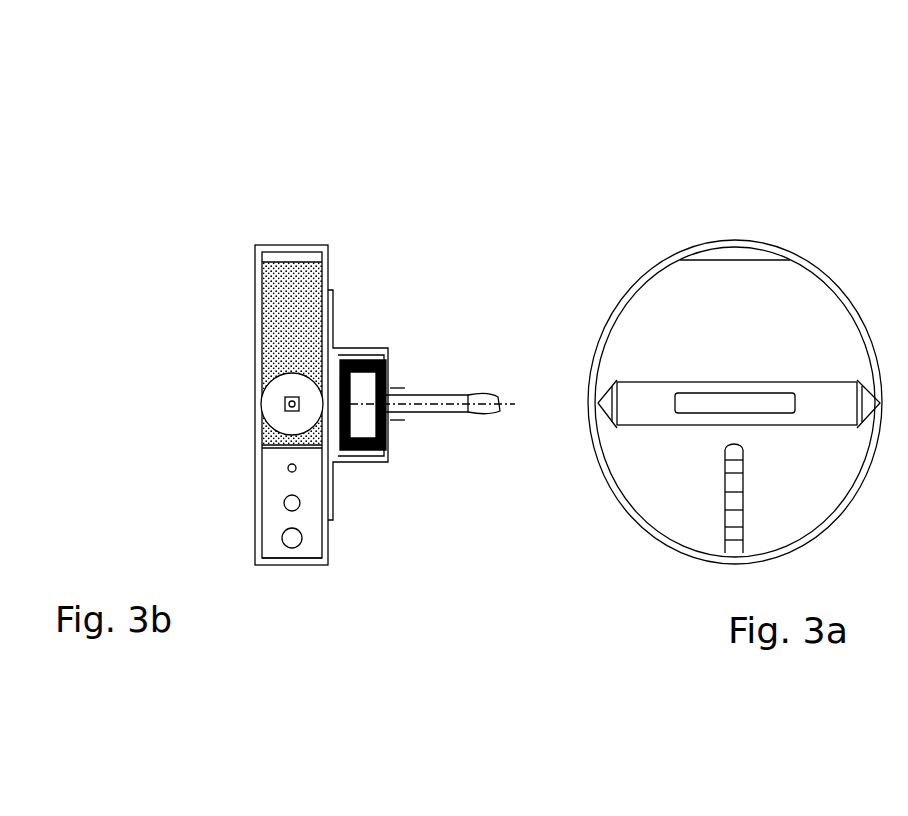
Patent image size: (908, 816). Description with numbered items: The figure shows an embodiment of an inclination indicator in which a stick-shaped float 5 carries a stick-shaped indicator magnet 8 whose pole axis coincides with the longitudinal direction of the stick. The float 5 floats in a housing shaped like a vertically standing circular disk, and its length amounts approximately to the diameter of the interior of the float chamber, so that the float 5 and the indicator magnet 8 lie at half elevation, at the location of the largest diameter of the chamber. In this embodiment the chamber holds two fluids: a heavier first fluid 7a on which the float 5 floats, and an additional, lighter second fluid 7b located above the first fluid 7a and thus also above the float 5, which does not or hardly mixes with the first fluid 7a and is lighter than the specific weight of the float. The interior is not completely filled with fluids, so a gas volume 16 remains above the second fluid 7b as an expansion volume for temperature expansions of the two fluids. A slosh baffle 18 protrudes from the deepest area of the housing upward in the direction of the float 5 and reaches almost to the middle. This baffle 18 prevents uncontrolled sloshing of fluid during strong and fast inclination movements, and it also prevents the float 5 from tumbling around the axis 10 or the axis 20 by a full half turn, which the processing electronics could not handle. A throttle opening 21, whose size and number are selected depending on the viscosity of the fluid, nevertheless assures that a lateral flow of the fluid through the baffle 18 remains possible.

In FIG. 3B, the float 5 is at (282, 385).
In FIG. 3A, the float 5 is at (658, 387).
In FIG. 3B, the first fluid 7a is at (328, 475).
In FIG. 3A, the first fluid 7a is at (825, 457).
In FIG. 3B, the second fluid 7b is at (258, 330).
In FIG. 3A, the second fluid 7b is at (643, 312).
In FIG. 3A, the indicator magnet 8 is at (772, 403).
In FIG. 3A, the axis 10 is at (733, 405).
In FIG. 3B, the gas volume 16 is at (287, 257).
In FIG. 3A, the gas volume 16 is at (743, 255).
In FIG. 3B, the slosh baffle 18 is at (268, 480).
In FIG. 3A, the slosh baffle 18 is at (735, 517).
In FIG. 3B, the axis 20 is at (417, 412).
In FIG. 3B, the throttle opening 21 is at (283, 548).
In FIG. 3A, the throttle opening 21 is at (745, 543).